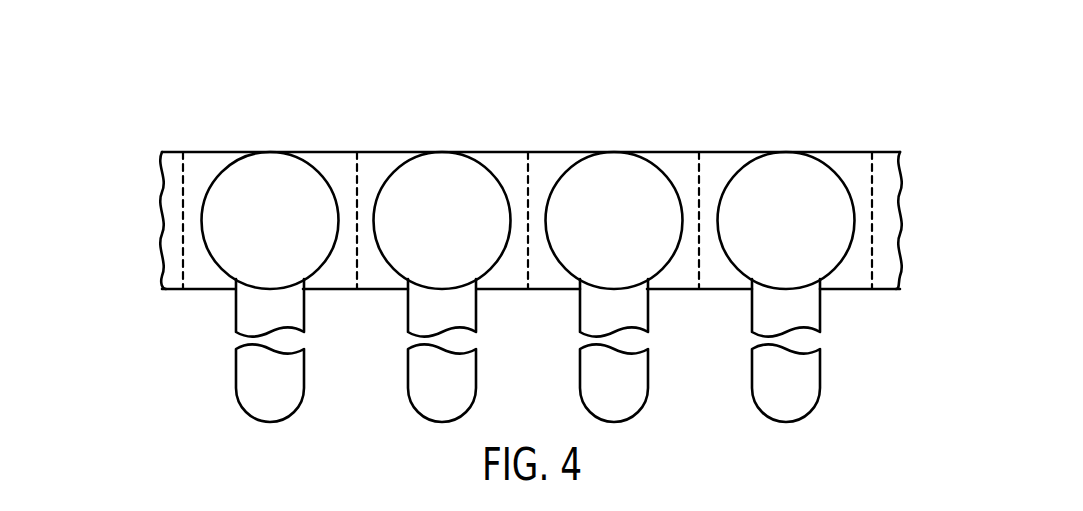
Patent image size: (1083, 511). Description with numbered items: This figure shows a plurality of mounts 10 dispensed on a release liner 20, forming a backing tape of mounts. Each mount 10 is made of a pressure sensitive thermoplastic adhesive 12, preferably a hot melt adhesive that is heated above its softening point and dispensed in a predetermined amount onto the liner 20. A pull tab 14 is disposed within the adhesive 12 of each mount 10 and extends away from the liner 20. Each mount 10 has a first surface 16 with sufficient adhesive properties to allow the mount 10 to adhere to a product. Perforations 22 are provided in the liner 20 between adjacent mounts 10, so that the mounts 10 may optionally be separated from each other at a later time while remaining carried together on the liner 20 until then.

The mount 10 is at (513, 245).
The pressure sensitive thermoplastic adhesive 12 is at (217, 265).
The pull tab 14 is at (246, 383).
The first surface 16 is at (295, 168).
The release liner 20 is at (883, 270).
The perforations 22 is at (183, 182).